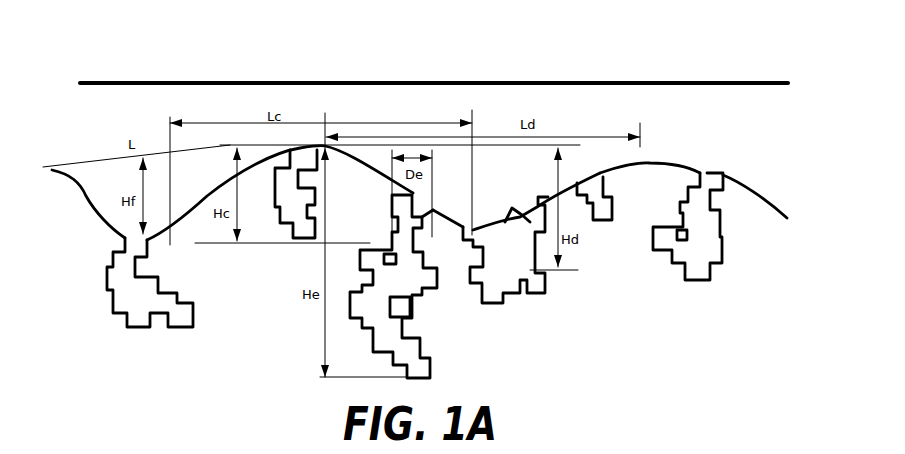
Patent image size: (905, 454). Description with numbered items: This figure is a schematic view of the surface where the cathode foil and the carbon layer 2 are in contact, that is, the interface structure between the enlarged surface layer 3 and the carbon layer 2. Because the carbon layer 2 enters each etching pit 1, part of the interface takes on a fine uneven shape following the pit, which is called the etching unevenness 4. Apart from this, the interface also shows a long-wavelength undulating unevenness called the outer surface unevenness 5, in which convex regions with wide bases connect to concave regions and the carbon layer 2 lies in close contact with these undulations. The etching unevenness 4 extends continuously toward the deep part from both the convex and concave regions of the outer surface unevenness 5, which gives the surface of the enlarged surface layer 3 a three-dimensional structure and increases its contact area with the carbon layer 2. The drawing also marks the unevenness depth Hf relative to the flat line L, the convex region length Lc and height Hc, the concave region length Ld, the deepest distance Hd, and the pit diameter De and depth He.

The etching pit 1 is at (710, 180).
The carbon layer 2 is at (718, 93).
The enlarged surface layer 3 is at (659, 178).
The etching unevenness 4 is at (427, 347).
The outer surface unevenness 5 is at (768, 191).